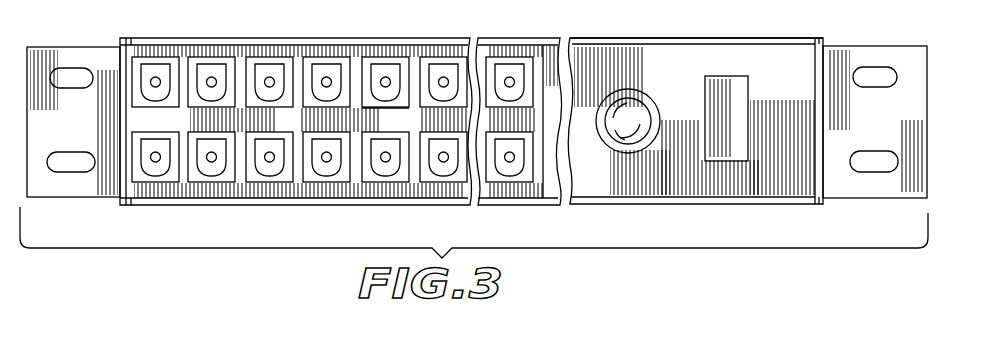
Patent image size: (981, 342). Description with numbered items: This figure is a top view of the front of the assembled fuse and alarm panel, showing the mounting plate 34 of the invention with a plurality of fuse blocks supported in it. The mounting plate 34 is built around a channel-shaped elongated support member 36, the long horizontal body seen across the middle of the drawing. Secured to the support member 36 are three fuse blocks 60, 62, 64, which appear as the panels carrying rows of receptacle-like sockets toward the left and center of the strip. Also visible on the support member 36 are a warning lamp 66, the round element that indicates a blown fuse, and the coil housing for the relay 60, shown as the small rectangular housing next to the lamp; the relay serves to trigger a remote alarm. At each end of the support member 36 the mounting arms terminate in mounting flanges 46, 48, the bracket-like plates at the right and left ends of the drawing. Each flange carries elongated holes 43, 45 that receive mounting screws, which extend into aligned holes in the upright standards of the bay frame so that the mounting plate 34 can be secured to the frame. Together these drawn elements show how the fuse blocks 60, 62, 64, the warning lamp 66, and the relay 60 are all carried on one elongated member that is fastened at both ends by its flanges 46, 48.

The mounting plate 34 is at (644, 32).
The channel-shaped elongated support member 36 is at (710, 53).
The hole 43 is at (873, 80).
The hole 45 is at (68, 88).
The mounting flange 46 is at (897, 58).
The mounting flange 48 is at (62, 62).
The fuse block 60 is at (245, 52).
The fuse block 62 is at (422, 52).
The fuse block 64 is at (520, 50).
The warning lamp 66 is at (637, 105).